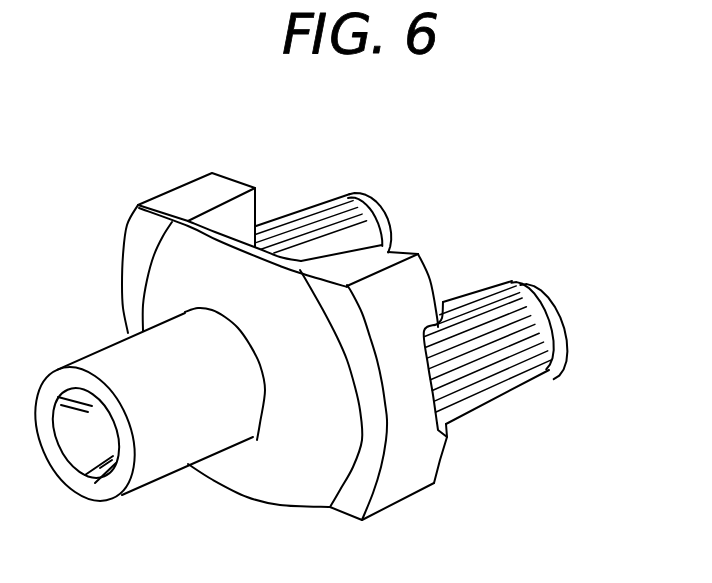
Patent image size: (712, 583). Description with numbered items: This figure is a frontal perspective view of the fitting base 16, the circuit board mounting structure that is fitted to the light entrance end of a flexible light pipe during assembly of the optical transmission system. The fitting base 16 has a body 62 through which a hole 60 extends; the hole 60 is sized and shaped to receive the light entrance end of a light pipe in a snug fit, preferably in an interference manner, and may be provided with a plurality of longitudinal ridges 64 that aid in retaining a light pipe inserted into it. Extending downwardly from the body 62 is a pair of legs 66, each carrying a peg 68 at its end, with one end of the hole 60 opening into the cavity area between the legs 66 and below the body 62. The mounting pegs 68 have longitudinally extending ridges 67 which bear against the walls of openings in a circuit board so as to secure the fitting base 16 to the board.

The fitting base 16 is at (189, 181).
The hole 60 is at (80, 450).
The body 62 is at (257, 462).
The longitudinal ridges 64 is at (53, 408).
The legs 66 is at (383, 203).
The longitudinally extending ridges 67 is at (533, 350).
The pegs 68 is at (333, 180).